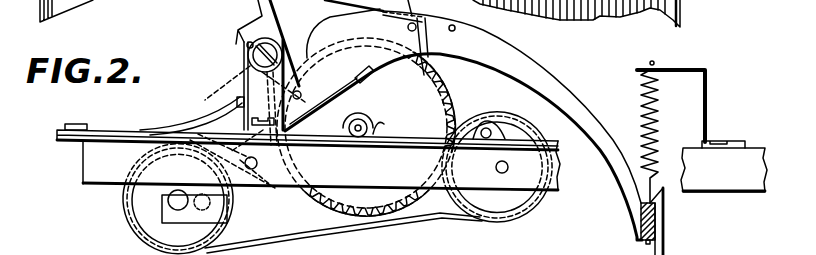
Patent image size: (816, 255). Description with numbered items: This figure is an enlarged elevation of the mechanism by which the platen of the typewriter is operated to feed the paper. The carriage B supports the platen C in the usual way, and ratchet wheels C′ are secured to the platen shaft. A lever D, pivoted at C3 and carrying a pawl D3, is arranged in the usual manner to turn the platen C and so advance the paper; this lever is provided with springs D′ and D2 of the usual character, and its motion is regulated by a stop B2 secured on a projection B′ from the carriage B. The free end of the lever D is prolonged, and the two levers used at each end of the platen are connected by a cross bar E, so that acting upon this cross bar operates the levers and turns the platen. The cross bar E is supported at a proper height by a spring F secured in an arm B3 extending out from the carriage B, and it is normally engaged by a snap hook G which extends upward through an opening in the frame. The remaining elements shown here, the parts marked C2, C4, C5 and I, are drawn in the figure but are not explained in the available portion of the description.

The carriage B is at (412, 158).
The projection B′ is at (244, 84).
The stop B2 is at (262, 22).
The arm B3 is at (708, 103).
The platen C is at (447, 104).
The ratchet wheels C′ is at (430, 238).
The roller C2 is at (378, 104).
The pivot C3 is at (170, 200).
The right pulley wheel C4 is at (506, 172).
The connecting bar C5 is at (321, 238).
The lever D is at (326, 52).
The spring D′ is at (205, 88).
The spring D2 is at (306, 115).
The pawl D3 is at (432, 72).
The cross bar E is at (657, 228).
The spring F is at (652, 105).
The snap hook G is at (665, 200).
The cutter I is at (77, 0).